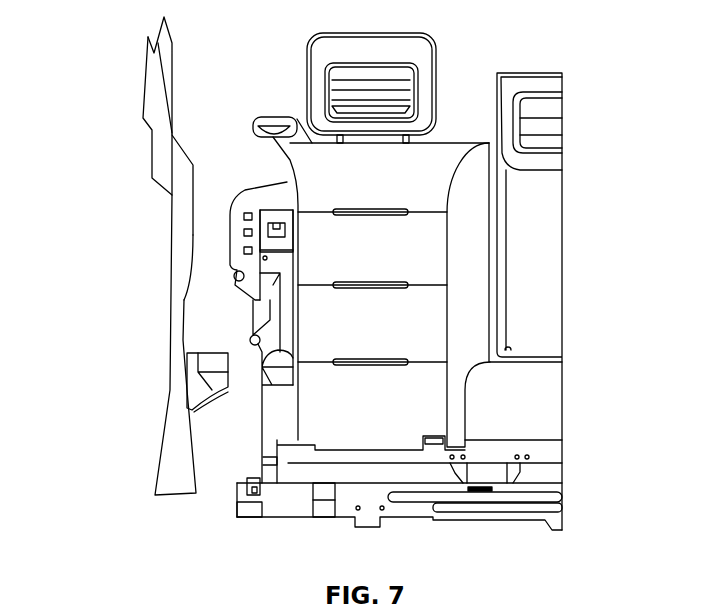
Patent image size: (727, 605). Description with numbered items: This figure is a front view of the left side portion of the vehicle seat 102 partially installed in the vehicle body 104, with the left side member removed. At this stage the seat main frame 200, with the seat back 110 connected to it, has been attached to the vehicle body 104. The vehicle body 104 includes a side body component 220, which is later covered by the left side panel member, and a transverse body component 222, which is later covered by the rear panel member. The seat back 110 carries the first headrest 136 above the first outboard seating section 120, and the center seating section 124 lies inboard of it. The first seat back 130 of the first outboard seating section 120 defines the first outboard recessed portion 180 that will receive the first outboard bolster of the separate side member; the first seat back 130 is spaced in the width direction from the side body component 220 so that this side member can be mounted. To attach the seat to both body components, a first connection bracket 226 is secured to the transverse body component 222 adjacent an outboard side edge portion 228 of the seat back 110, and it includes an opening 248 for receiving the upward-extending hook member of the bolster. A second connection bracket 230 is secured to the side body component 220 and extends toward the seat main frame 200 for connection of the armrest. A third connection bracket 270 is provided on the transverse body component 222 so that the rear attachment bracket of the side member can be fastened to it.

The vehicle body 104 is at (112, 36).
The vehicle seat 102 is at (545, 50).
The first headrest 136 is at (350, 50).
The seat back 110 is at (443, 157).
The center seating section 124 is at (552, 203).
The first seat back 130 is at (428, 268).
The first outboard seating section 120 is at (428, 328).
The transverse body component 222 is at (236, 200).
The outboard side edge portion 228 is at (300, 195).
The first connection bracket 226 is at (278, 265).
The first outboard recessed portion 180 is at (300, 332).
The side body component 220 is at (172, 235).
The opening 248 is at (268, 228).
The second connection bracket 230 is at (215, 392).
The third connection bracket 270 is at (267, 458).
The seat main frame 200 is at (407, 508).